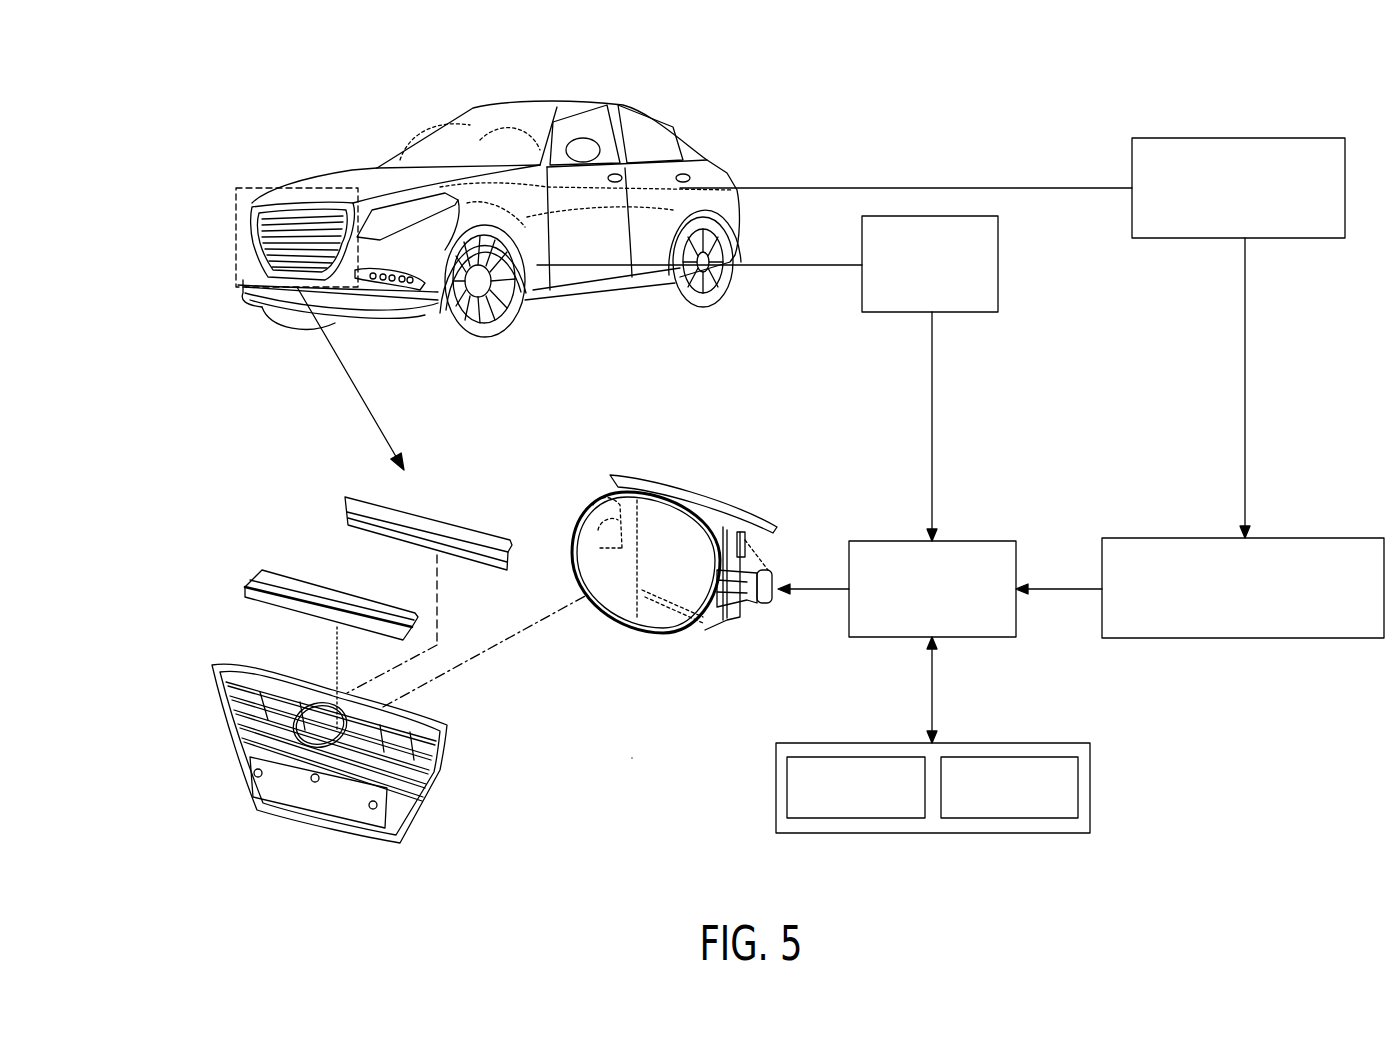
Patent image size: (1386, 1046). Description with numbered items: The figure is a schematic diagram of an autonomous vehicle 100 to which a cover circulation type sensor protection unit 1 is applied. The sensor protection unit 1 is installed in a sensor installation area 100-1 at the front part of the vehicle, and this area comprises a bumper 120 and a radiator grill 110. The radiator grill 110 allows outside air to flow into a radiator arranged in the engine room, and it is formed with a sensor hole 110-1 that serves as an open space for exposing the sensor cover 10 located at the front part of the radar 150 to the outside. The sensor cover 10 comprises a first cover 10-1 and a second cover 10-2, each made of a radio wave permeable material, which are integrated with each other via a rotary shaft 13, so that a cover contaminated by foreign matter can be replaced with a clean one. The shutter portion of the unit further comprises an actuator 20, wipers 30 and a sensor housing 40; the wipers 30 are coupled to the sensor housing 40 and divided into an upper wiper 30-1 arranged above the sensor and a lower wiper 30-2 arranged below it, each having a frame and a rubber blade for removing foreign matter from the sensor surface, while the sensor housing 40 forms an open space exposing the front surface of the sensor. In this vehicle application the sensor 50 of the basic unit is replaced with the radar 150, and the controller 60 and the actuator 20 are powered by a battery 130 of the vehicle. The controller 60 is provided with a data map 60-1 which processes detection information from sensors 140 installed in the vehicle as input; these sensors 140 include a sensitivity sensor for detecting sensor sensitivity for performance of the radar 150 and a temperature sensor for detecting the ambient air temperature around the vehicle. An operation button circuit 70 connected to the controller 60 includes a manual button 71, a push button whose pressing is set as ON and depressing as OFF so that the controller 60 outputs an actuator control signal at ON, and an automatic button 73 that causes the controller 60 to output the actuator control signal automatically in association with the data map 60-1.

The sensor protection unit 1 is at (632, 758).
The sensor cover 10 is at (700, 510).
The first cover 10-1 is at (592, 512).
The second cover 10-2 is at (687, 493).
The rotary shaft 13 is at (767, 570).
The actuator 20 is at (743, 612).
The wiper 30 is at (346, 503).
The upper wiper 30-1 is at (377, 513).
The lower wiper 30-2 is at (262, 570).
The sensor housing 40 is at (337, 760).
The sensor 50 is at (700, 523).
The controller 60 is at (976, 541).
The data map 60-1 is at (1318, 538).
The operation button circuit 70 is at (972, 750).
The manual button 71 is at (1008, 757).
The automatic button 73 is at (854, 757).
The autonomous vehicle 100 is at (660, 128).
The sensor installation area 100-1 is at (252, 188).
The radiator grill 110 is at (250, 240).
The sensor hole 110-1 is at (310, 732).
The bumper 120 is at (240, 297).
The battery 130 is at (998, 288).
The sensors installed in the vehicle 140 is at (1243, 138).
The radar 150 is at (700, 540).